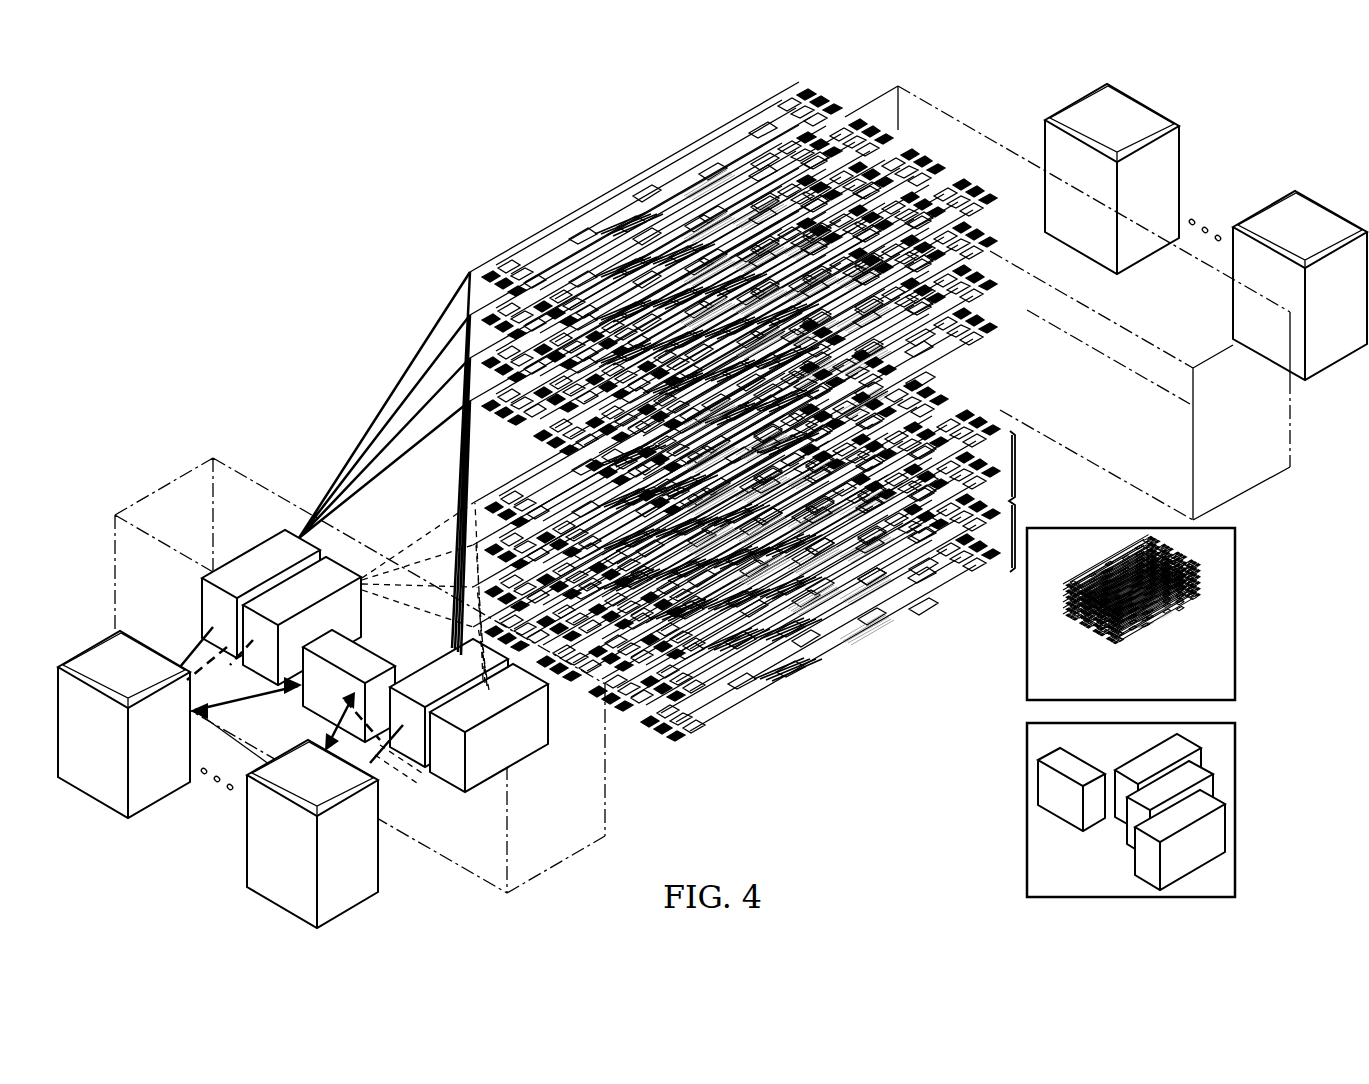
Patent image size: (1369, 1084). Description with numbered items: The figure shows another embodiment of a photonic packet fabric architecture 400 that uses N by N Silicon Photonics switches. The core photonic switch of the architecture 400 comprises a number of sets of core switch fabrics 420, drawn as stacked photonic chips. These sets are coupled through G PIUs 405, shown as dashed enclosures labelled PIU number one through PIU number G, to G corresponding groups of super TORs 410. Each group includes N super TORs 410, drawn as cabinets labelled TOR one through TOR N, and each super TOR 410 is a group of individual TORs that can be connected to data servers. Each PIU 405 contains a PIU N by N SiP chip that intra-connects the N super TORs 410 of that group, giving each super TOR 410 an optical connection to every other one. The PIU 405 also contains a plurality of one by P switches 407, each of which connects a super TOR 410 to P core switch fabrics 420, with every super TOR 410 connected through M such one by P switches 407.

The photonic packet fabric architecture 400 is at (299, 244).
The PIU 405 is at (1296, 506).
The 1×P switch 407 is at (250, 549).
The super TOR 410 is at (162, 786).
The core switch fabric 420 is at (607, 196).